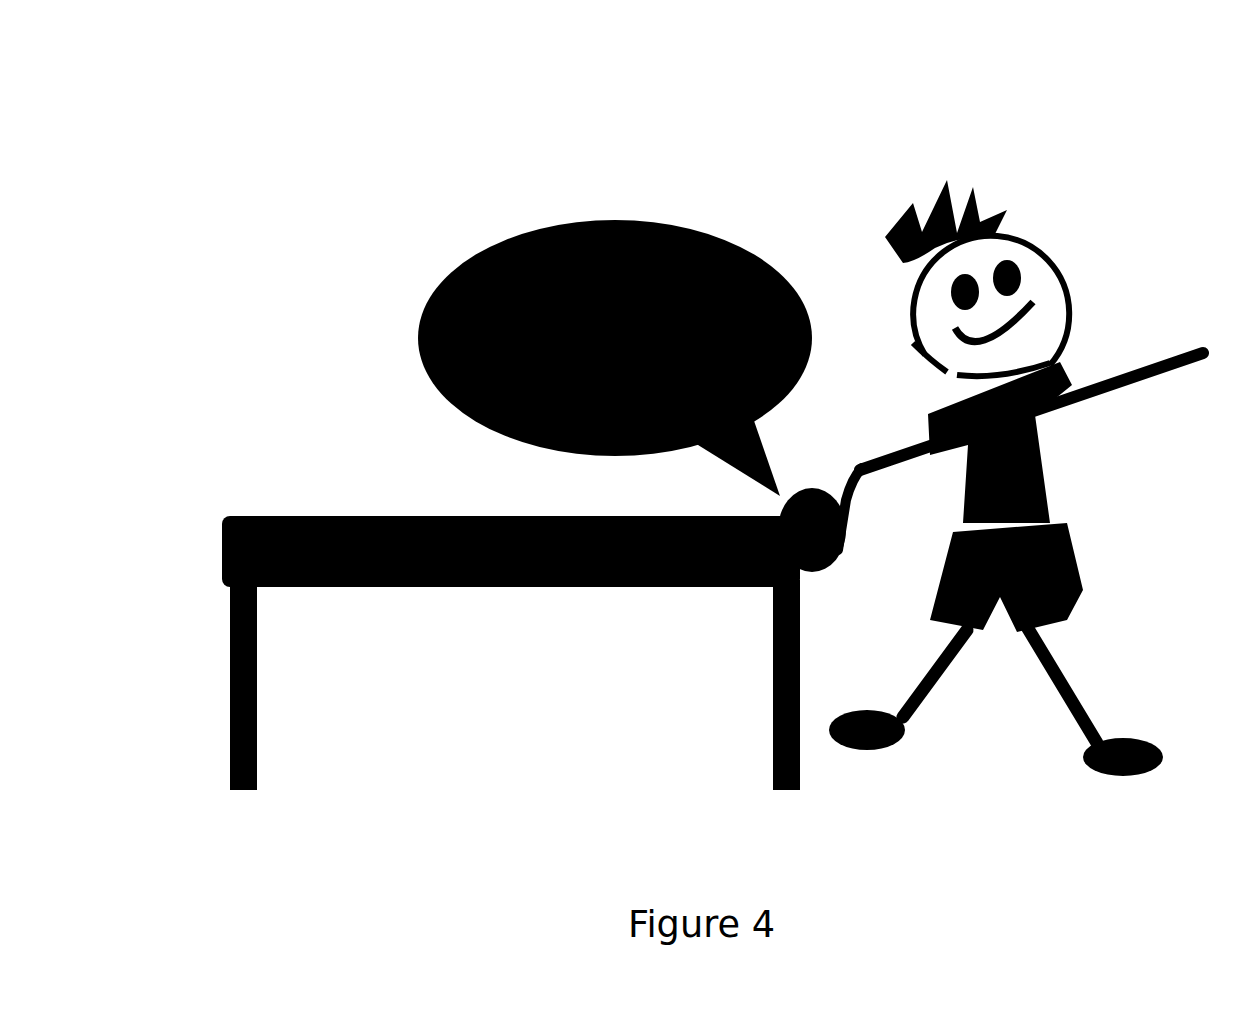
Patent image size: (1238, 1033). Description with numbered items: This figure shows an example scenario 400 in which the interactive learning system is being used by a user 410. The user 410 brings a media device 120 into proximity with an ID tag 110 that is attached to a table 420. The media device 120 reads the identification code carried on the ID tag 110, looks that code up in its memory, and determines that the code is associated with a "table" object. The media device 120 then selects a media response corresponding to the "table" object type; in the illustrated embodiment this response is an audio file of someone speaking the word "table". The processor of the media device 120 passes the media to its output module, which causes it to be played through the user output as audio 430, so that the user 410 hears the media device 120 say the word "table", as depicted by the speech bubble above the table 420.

The example scenario 400 is at (222, 80).
The user 410 is at (1060, 525).
The table 420 is at (287, 516).
The audio 430 is at (623, 217).
The media device 120 is at (790, 510).
The ID tag 110 is at (758, 583).